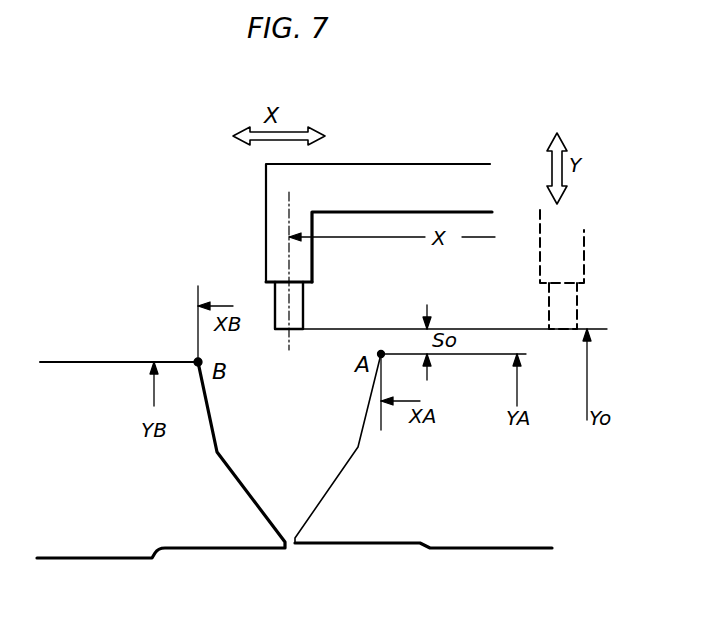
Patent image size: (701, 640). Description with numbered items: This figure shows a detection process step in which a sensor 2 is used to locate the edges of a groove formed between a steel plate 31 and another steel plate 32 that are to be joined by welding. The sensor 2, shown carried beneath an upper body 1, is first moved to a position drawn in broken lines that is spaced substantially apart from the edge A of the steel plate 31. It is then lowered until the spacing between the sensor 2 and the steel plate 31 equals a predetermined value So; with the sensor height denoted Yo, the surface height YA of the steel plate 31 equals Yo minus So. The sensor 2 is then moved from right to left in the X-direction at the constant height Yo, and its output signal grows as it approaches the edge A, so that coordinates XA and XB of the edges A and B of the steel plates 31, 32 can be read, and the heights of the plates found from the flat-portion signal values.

The upper die 1 is at (414, 170).
The sensor 2 is at (303, 312).
The steel plate 31 is at (488, 540).
The steel plate 32 is at (118, 545).